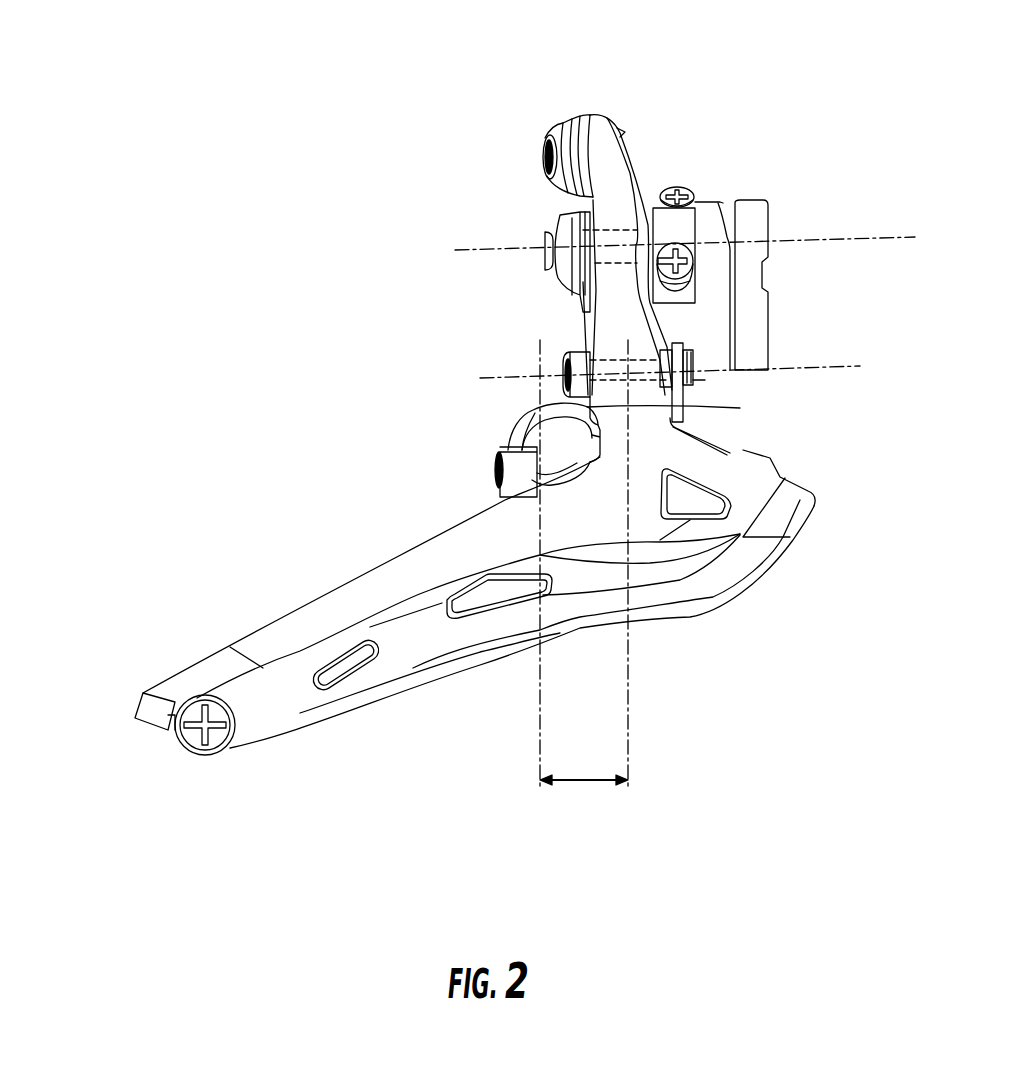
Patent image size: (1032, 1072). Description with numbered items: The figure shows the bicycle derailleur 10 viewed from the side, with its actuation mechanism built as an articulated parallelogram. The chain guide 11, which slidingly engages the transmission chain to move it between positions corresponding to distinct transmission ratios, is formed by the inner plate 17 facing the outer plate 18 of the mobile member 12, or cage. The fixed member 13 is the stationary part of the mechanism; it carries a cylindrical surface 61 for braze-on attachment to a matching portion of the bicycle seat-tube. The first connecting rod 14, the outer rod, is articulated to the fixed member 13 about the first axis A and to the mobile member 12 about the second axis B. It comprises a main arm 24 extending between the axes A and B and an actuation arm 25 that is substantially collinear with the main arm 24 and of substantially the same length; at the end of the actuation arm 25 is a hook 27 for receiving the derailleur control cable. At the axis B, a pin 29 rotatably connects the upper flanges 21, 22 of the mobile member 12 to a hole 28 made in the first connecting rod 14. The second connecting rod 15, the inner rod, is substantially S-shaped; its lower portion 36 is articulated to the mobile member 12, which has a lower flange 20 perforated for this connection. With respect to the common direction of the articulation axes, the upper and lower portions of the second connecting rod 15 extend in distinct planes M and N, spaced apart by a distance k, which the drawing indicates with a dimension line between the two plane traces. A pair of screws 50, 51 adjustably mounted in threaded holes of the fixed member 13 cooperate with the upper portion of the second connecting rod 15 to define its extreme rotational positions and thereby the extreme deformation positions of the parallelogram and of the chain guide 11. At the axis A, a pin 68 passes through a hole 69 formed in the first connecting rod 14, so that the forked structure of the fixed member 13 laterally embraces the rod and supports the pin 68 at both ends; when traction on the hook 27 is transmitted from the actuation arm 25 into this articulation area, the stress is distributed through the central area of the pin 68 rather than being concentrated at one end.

The derailleur 10 is at (348, 118).
The chain guide 11 is at (133, 738).
The mobile member 12 is at (494, 581).
The fixed member 13 is at (758, 227).
The first connecting rod 14 is at (640, 203).
The second connecting rod 15 is at (506, 412).
The inner plate 17 is at (413, 640).
The outer plate 18 is at (327, 610).
The lower flange 20 is at (505, 438).
The upper flange 21 is at (690, 405).
The upper flange 22 is at (565, 393).
The main arm 24 is at (536, 253).
The actuation arm 25 is at (613, 177).
The hook 27 is at (557, 148).
The hole 28 is at (617, 360).
The pin 29 is at (705, 381).
The lower portion 36 is at (533, 423).
The screw 50 is at (676, 186).
The screw 51 is at (698, 288).
The cylindrical surface 61 is at (757, 227).
The pin 68 is at (550, 236).
The hole 69 is at (622, 228).
The first axis A is at (907, 236).
The second axis B is at (838, 366).
The plane N is at (540, 772).
The plane M is at (628, 778).
The distance k is at (584, 807).